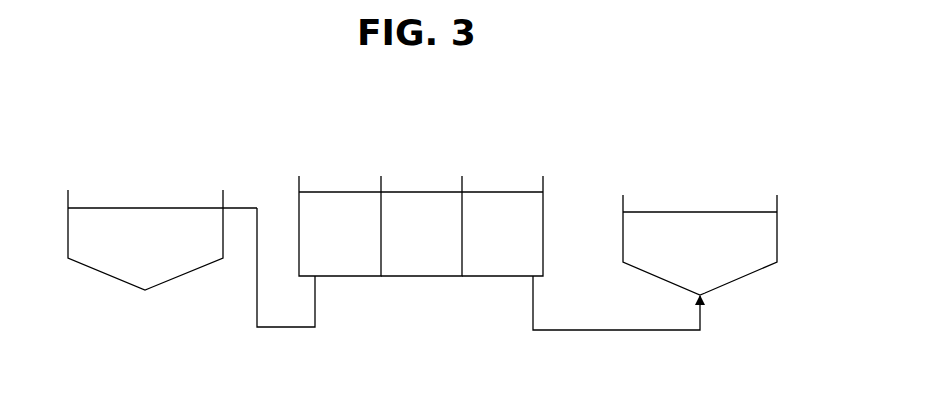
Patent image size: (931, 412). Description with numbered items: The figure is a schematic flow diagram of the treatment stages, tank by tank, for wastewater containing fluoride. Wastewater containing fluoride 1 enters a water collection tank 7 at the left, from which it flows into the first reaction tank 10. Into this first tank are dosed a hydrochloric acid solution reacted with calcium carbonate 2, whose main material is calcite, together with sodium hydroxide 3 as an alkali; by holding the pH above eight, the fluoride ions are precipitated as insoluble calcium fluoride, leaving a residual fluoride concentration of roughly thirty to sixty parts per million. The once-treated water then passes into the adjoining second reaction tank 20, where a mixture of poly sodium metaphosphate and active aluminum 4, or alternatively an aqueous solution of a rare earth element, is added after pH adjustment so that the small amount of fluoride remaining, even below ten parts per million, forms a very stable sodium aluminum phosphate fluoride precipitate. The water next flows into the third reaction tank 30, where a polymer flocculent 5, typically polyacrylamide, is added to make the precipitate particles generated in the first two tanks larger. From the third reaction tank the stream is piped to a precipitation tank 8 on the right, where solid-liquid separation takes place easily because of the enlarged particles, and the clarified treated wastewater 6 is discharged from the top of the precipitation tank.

The wastewater containing fluoride 1 is at (146, 293).
The hydrochloric acid solution reacted with calcium carbonate 2 is at (311, 202).
The sodium hydroxide 3 is at (349, 202).
The mixture of poly sodium metaphosphate and active aluminum 4 is at (391, 202).
The polymer flocculent 5 is at (472, 202).
The treated wastewater 6 is at (777, 212).
The water collection tank 7 is at (165, 285).
The precipitation tank 8 is at (723, 287).
The first reaction tank 10 is at (332, 277).
The second reaction tank 20 is at (402, 277).
The third reaction tank 30 is at (470, 277).